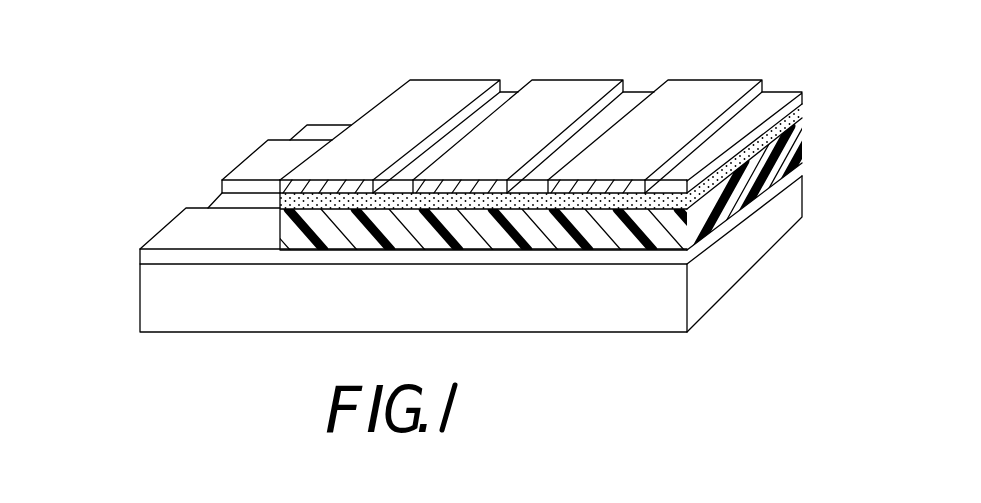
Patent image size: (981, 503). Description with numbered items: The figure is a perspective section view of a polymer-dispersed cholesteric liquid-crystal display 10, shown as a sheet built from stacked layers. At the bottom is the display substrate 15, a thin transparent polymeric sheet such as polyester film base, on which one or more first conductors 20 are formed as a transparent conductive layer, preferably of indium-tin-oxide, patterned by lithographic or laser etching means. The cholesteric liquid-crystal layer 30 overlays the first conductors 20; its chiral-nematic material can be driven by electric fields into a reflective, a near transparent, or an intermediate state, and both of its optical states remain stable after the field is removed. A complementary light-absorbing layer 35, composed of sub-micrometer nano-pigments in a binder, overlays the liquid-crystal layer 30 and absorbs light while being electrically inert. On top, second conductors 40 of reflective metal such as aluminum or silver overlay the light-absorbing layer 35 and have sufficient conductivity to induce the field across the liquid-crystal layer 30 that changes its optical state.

The display 10 is at (240, 86).
The display substrate 15 is at (157, 303).
The first conductors 20 is at (268, 162).
The cholesteric liquid-crystal layer 30 is at (801, 127).
The complementary light-absorbing layer 35 is at (776, 94).
The second conductors 40 is at (443, 88).